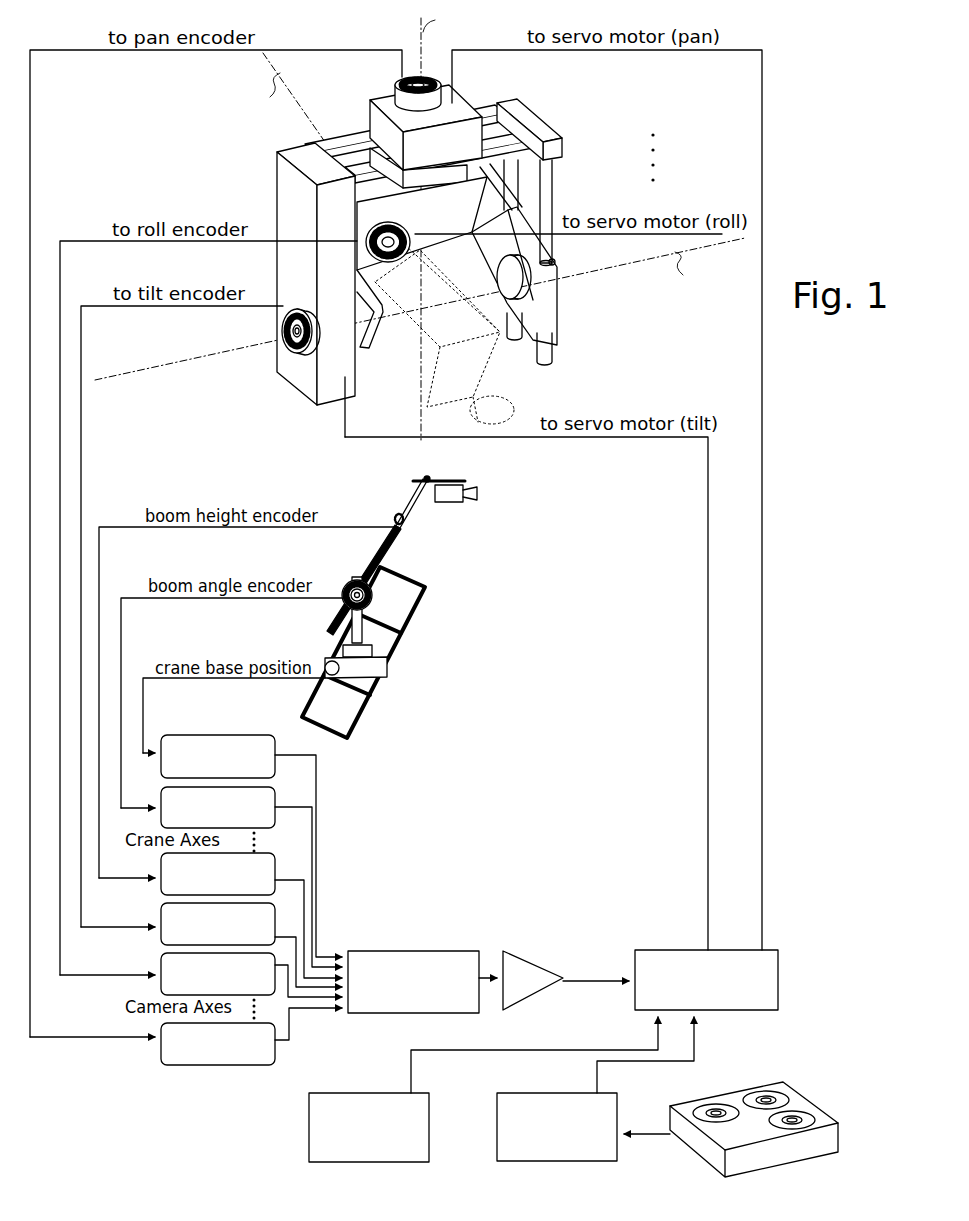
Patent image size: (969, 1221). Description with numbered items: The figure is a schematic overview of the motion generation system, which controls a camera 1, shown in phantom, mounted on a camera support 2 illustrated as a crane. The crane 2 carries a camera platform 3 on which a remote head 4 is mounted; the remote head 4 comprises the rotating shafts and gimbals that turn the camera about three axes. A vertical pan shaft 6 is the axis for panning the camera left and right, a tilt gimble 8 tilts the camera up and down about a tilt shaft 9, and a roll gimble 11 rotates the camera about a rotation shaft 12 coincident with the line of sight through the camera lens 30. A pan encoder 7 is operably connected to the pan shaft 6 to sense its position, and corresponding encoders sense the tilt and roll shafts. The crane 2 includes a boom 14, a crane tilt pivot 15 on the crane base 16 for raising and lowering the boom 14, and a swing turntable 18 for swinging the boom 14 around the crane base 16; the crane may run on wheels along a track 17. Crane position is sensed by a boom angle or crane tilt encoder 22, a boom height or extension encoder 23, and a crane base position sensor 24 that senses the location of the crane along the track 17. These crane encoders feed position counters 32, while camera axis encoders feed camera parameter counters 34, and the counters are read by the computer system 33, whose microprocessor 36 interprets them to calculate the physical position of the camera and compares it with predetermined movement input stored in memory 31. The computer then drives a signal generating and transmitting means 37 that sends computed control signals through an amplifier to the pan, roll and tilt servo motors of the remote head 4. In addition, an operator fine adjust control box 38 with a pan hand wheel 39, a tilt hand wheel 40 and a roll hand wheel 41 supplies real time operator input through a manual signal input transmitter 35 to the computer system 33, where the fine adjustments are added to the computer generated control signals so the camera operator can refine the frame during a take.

The camera 1 is at (497, 357).
The camera support 2 is at (413, 552).
The camera platform 3 is at (467, 479).
The remote head 4 is at (233, 180).
The pan shaft 6 is at (444, 88).
The pan encoder 7 is at (426, 78).
The tilt gimble 8 is at (307, 350).
The tilt shaft 9 is at (292, 341).
The roll gimble 11 is at (415, 234).
The rotation shaft 12 is at (405, 226).
The boom 14 is at (412, 515).
The crane tilt pivot 15 is at (343, 598).
The crane base 16 is at (380, 677).
The track 17 is at (400, 637).
The crane rotation or swing turntable 18 is at (375, 648).
The crane tilt encoder 22 is at (377, 593).
The boom extension encoder 23 is at (396, 515).
The crane base position sensor 24 is at (234, 734).
The camera lens 30 is at (498, 380).
The memory 31 is at (308, 1133).
The position counters 32 is at (165, 1068).
The computer system 33 is at (491, 911).
The camera parameter counters 34 is at (288, 722).
The manual signal input transmitter 35 is at (513, 1145).
The microprocessor 36 is at (441, 950).
The signal generating and transmitting means 37 is at (671, 950).
The operator fine adjust control box 38 is at (725, 1137).
The pan hand wheel 39 is at (708, 1100).
The tilt hand wheel 40 is at (752, 1090).
The roll hand wheel 41 is at (790, 1112).